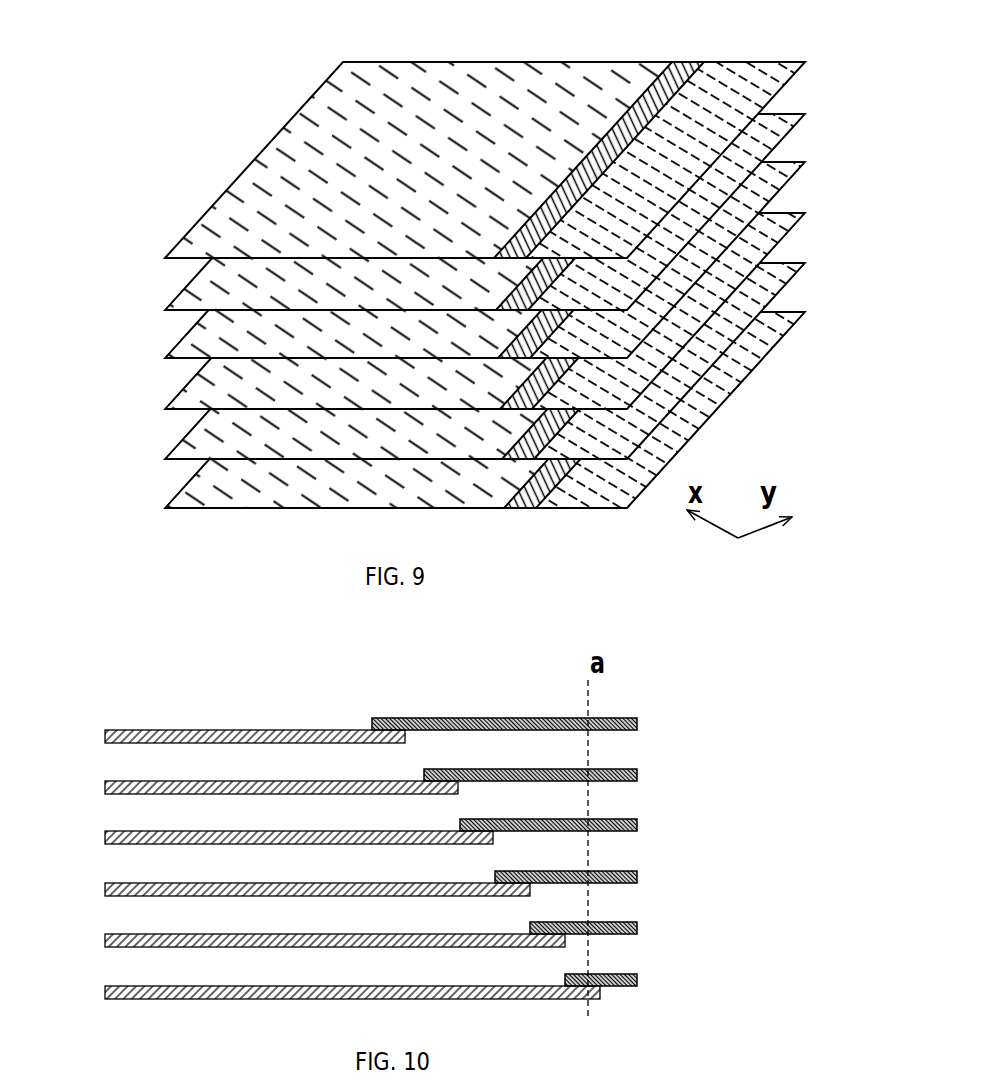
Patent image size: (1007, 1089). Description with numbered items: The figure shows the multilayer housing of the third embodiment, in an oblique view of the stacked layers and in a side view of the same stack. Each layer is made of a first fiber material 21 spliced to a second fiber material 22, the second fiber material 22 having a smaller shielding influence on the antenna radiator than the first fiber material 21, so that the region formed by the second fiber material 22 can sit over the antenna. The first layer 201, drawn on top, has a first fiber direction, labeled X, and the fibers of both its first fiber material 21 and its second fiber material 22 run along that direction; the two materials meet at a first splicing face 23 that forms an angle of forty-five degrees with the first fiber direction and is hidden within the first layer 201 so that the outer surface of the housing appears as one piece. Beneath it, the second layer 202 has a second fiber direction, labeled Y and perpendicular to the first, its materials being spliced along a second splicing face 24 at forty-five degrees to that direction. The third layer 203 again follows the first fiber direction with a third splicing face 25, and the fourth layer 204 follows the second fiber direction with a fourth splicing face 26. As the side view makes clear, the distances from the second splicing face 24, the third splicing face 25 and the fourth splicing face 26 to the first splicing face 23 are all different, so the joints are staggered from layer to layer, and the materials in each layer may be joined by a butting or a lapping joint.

In FIG. 9, the first fiber material 21 is at (248, 202).
In FIG. 10, the first fiber material 21 is at (120, 738).
In FIG. 9, the second fiber material 22 is at (733, 93).
In FIG. 10, the second fiber material 22 is at (610, 722).
In FIG. 9, the first splicing face 23 is at (665, 80).
In FIG. 9, the second splicing face 24 is at (531, 283).
In FIG. 9, the third splicing face 25 is at (528, 342).
In FIG. 9, the fourth splicing face 26 is at (545, 387).
In FIG. 9, the first layer 201 is at (285, 123).
In FIG. 10, the first layer 201 is at (428, 717).
In FIG. 9, the second layer 202 is at (213, 312).
In FIG. 10, the second layer 202 is at (637, 775).
In FIG. 9, the third layer 203 is at (203, 347).
In FIG. 10, the third layer 203 is at (638, 827).
In FIG. 9, the fourth layer 204 is at (197, 395).
In FIG. 10, the fourth layer 204 is at (638, 878).